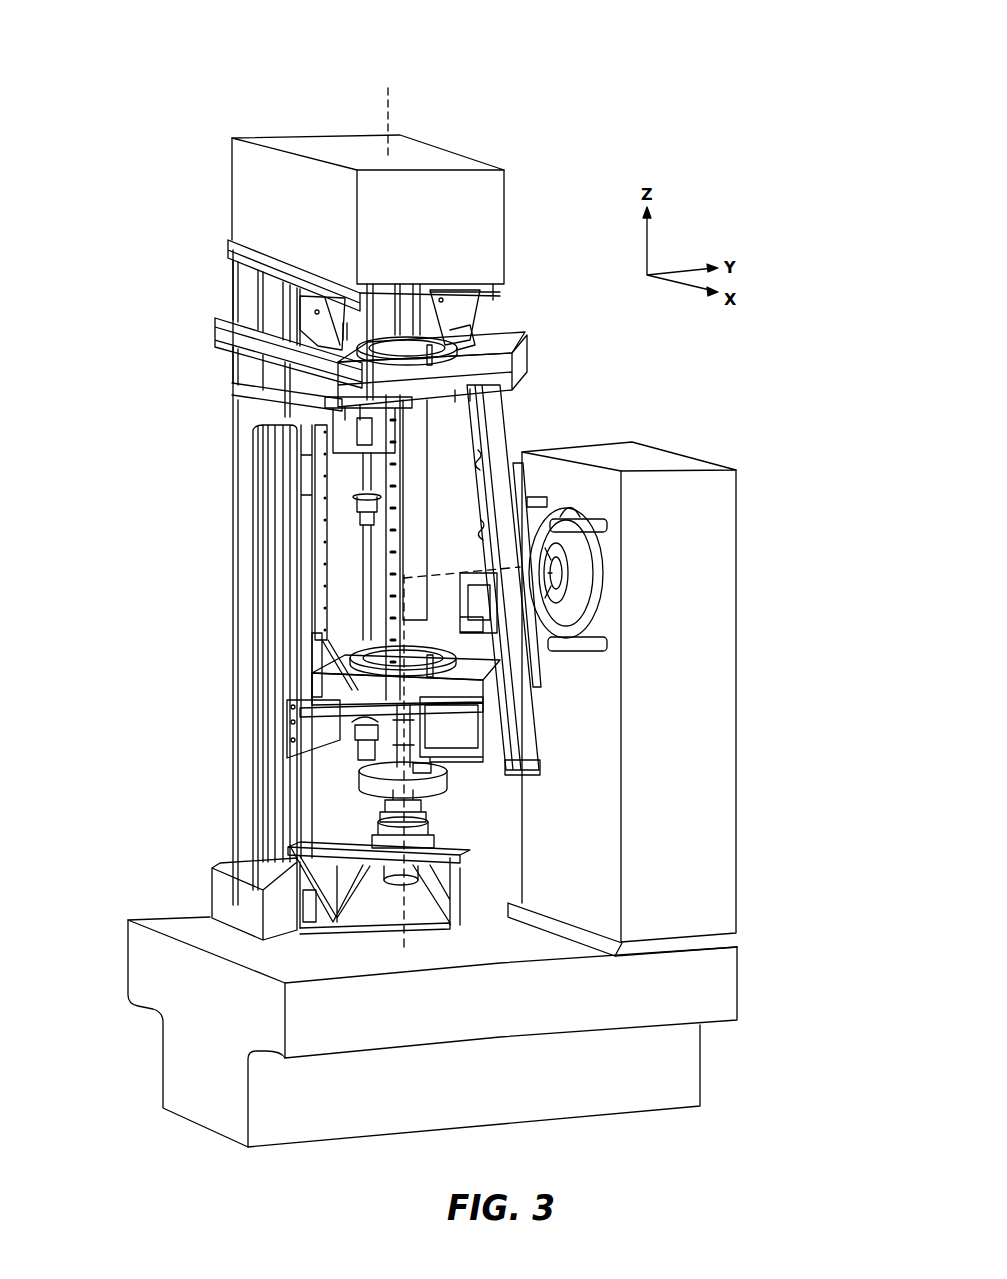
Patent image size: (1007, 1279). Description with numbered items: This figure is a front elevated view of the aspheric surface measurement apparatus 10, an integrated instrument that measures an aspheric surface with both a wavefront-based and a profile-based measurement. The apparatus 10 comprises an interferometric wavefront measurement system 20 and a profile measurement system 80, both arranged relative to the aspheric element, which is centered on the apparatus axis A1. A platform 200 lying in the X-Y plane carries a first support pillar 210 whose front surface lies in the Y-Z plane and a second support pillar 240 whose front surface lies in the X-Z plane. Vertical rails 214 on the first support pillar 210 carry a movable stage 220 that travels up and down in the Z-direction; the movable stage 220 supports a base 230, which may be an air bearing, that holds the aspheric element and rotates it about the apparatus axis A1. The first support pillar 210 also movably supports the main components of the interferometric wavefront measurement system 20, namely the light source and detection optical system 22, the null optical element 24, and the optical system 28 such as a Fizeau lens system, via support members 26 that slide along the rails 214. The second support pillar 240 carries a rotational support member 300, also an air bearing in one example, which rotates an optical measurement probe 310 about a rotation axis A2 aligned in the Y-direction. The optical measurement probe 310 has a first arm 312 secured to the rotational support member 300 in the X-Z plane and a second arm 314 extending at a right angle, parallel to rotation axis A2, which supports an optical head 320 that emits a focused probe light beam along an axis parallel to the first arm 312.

The aspheric surface measurement apparatus 10 is at (597, 84).
The interferometric wavefront measurement system 20 is at (166, 368).
The light source and detection optical system 22 is at (300, 145).
The null optical element 24 is at (395, 660).
The support members 26 is at (517, 367).
The optical system 28 is at (462, 328).
The profile measurement system 80 is at (596, 711).
The platform 200 is at (200, 985).
The first support pillar 210 is at (243, 490).
The vertical rails 214 is at (392, 523).
The movable stage 220 is at (340, 866).
The base 230 is at (356, 808).
The second support pillar 240 is at (737, 568).
The rotational support member 300 is at (585, 580).
The optical measurement probe 310 is at (518, 403).
The first arm 312 is at (500, 430).
The second arm 314 is at (457, 757).
The optical head 320 is at (416, 774).
The apparatus axis A1 is at (401, 102).
The rotation axis A2 is at (445, 575).